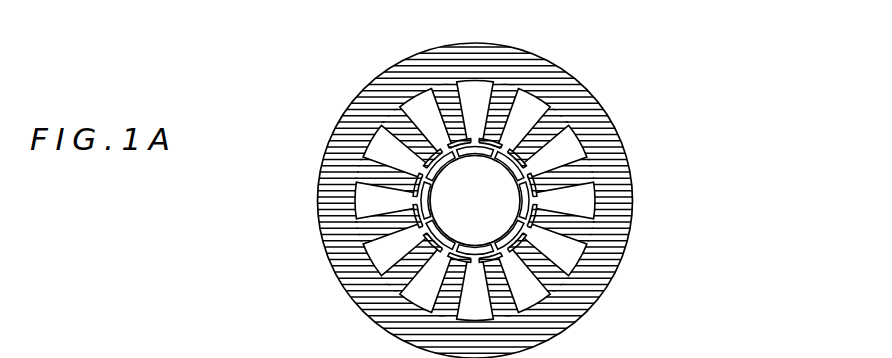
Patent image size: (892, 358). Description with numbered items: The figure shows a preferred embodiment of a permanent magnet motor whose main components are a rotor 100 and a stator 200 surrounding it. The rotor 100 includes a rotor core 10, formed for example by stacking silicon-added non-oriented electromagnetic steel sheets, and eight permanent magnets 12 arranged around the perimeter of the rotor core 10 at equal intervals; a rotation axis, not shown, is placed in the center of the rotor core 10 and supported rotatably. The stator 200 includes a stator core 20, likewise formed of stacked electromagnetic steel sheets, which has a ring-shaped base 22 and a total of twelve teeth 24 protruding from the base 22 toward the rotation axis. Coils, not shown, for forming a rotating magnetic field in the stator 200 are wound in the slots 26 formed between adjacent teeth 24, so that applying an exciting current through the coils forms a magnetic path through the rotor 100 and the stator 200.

The stator 200 is at (612, 122).
The rotor 100 is at (720, 128).
The rotor core 10 is at (490, 213).
The permanent magnets 12 is at (522, 175).
The stator core 20 is at (238, 168).
The ring-shaped base 22 is at (335, 243).
The teeth 24 is at (388, 228).
The slots 26 is at (385, 258).